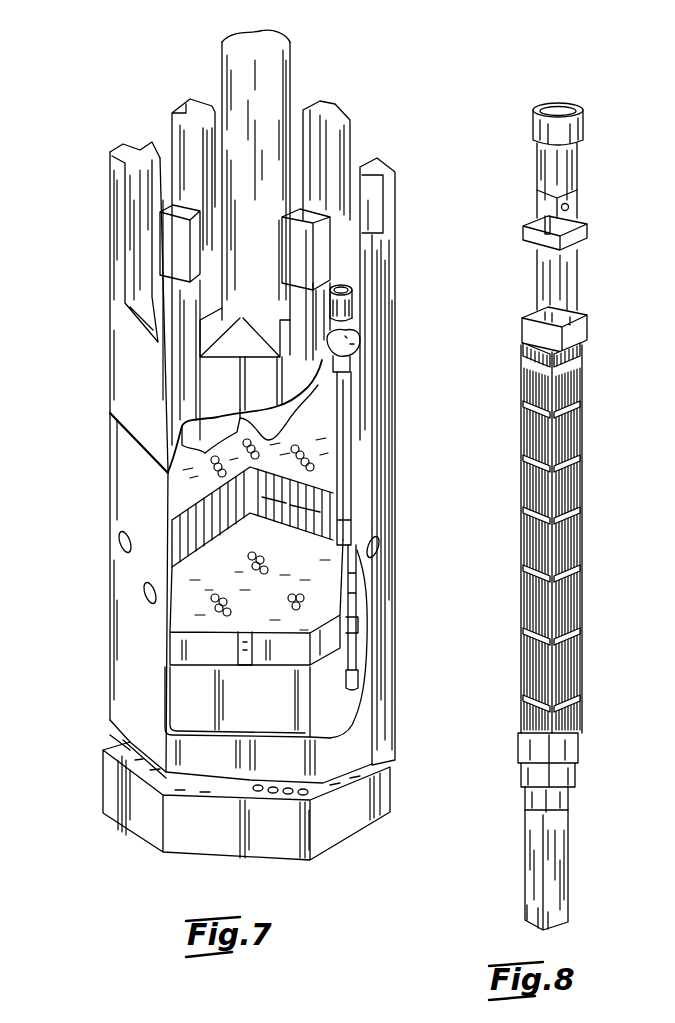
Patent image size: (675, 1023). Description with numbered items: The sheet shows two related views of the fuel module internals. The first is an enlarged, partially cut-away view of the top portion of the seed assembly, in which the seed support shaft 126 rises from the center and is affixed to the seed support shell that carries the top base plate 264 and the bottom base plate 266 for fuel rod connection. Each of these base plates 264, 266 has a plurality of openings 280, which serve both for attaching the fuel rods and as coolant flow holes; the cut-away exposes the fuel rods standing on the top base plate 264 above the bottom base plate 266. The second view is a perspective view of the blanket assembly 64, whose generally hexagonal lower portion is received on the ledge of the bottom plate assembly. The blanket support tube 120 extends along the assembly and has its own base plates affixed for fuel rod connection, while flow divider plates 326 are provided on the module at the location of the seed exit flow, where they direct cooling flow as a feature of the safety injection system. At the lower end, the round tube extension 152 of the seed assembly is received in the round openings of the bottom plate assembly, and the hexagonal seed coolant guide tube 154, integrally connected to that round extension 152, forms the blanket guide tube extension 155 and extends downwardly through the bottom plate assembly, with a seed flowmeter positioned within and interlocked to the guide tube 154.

In FIG. 7, the seed support shaft 126 is at (240, 71).
In FIG. 7, the openings 280 is at (357, 449).
In FIG. 7, the top base plate 264 is at (312, 505).
In FIG. 7, the bottom base plate 266 is at (110, 778).
In FIG. 8, the blanket support tube 120 is at (540, 278).
In FIG. 8, the flow divider plates 326 is at (527, 231).
In FIG. 8, the blanket assembly 64 is at (513, 443).
In FIG. 8, the round tube extension 152 is at (523, 786).
In FIG. 8, the blanket guide tube extension 155 is at (536, 824).
In FIG. 8, the hexagonal seed coolant guide tube 154 is at (536, 911).